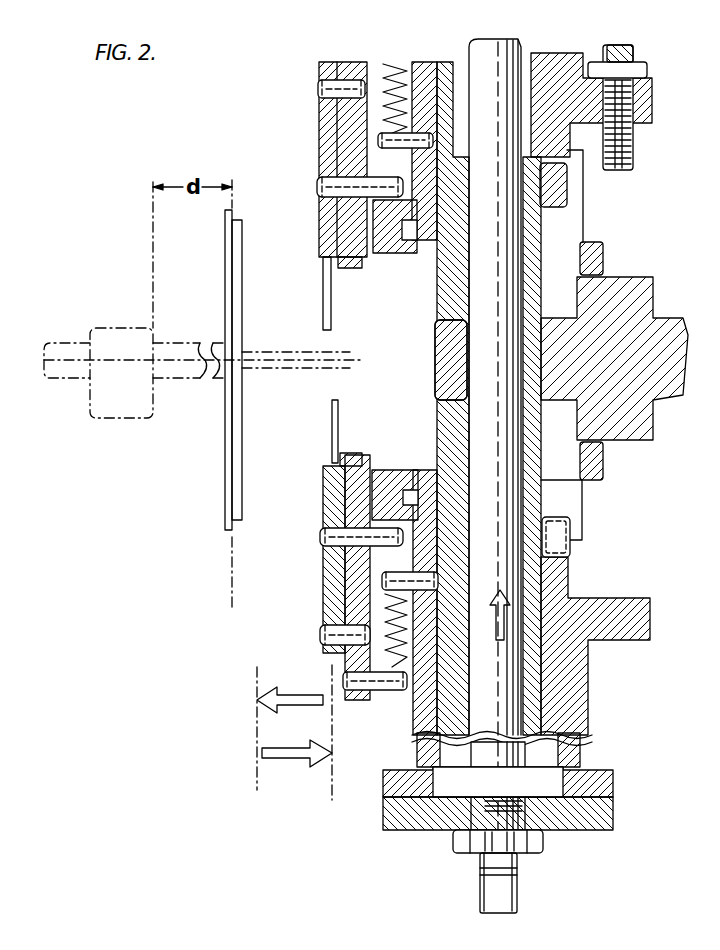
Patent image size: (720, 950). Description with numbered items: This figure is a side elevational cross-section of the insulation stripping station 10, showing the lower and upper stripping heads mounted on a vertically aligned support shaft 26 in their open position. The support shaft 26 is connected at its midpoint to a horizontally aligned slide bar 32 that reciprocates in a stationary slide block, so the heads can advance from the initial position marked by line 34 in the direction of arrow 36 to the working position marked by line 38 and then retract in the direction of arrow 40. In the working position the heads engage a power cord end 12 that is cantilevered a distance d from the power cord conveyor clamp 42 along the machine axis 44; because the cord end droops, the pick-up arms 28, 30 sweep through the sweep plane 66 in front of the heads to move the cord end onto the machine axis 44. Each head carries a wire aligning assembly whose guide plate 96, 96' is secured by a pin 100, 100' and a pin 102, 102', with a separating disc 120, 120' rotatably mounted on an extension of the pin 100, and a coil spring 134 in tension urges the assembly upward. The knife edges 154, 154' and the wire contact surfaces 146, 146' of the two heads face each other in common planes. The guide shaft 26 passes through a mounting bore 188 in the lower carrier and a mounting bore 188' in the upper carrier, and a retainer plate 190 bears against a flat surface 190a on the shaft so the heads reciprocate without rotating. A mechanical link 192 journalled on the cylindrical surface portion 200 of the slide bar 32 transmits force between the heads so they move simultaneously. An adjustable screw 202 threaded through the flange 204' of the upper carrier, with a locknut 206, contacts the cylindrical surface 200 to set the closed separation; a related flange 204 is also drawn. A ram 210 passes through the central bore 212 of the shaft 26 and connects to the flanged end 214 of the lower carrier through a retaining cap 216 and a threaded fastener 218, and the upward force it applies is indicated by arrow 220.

The insulation stripping station 10 is at (172, 120).
The power cord end 12 is at (190, 380).
The support shaft 26 is at (540, 585).
The power cord pick-up arm 28 is at (218, 498).
The power cord pick-up arm 30 is at (252, 447).
The slide bar 32 is at (684, 393).
The initial position line 34 is at (340, 798).
The advance arrow 36 is at (297, 692).
The working position line 38 is at (256, 780).
The retract arrow 40 is at (282, 760).
The power cord conveyor clamp 42 is at (120, 420).
The machine axis 44 is at (352, 362).
The sweep plane 66 is at (230, 583).
The guide plate 96 is at (321, 550).
The guide plate 96' is at (320, 196).
The pin 100 is at (332, 547).
The pin 100' is at (335, 174).
The pin 102 is at (315, 623).
The pin 102' is at (311, 93).
The separating disc 120 is at (364, 434).
The separating disc 120' is at (346, 289).
The coil spring 134 is at (382, 692).
The wire contact surface 146 is at (404, 481).
The wire contact surface 146' is at (405, 246).
The insulation cutting edge 154 is at (398, 443).
The insulation cutting edge 154' is at (398, 288).
The mounting bore 188 is at (537, 748).
The mounting bore 188' is at (406, 88).
The retainer plate 190 is at (572, 537).
The flat surface 190a is at (552, 500).
The mechanical link 192 is at (603, 252).
The cylindrical surface portion 200 is at (633, 443).
The adjustable screw 202 is at (630, 132).
The flange 204 is at (668, 614).
The flange 204' is at (620, 147).
The locknut 206 is at (644, 66).
The ram 210 is at (514, 512).
The central bore 212 is at (525, 673).
The flanged end 214 is at (604, 782).
The retaining cap 216 is at (600, 818).
The threaded fastener 218 is at (545, 845).
The upward force arrow 220 is at (490, 622).